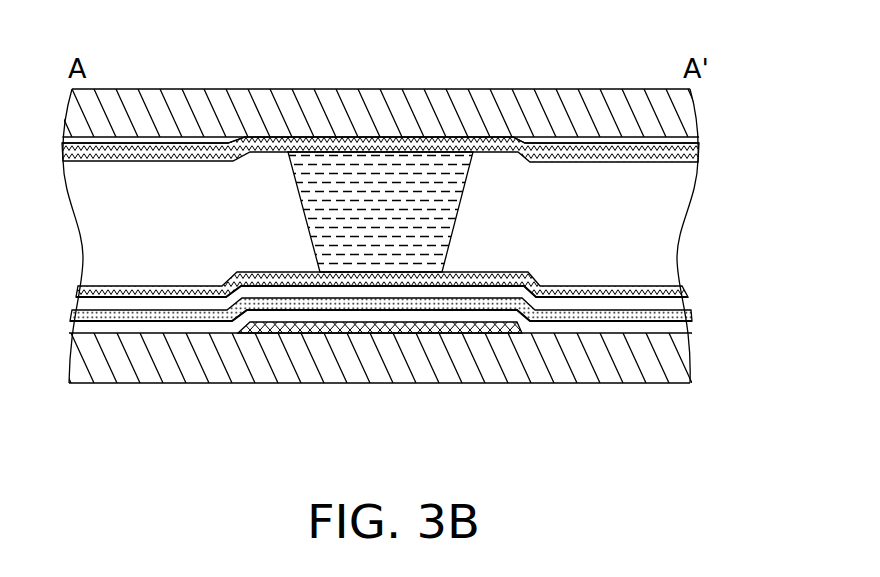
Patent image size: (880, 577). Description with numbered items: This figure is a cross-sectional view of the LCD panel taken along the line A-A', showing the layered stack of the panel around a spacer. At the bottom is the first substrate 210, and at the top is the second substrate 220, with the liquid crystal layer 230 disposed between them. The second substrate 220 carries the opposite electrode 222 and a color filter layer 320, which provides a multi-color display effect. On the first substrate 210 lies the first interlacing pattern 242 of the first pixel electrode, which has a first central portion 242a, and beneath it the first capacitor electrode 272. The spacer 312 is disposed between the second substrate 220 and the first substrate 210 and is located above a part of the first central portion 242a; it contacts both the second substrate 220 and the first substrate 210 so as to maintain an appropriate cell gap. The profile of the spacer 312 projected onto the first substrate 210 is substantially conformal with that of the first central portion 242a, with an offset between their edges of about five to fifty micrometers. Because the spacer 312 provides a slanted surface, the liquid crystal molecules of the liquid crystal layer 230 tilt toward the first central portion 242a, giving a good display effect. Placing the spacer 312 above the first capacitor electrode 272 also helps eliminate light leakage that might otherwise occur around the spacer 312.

The first substrate 210 is at (638, 360).
The second substrate 220 is at (665, 118).
The opposite electrode 222 is at (680, 155).
The liquid crystal layer 230 is at (637, 220).
The first interlacing pattern 242 is at (682, 290).
The first central portion 242a is at (330, 278).
The first capacitor electrode 272 is at (403, 335).
The spacer 312 is at (378, 165).
The color filter layer 320 is at (673, 143).